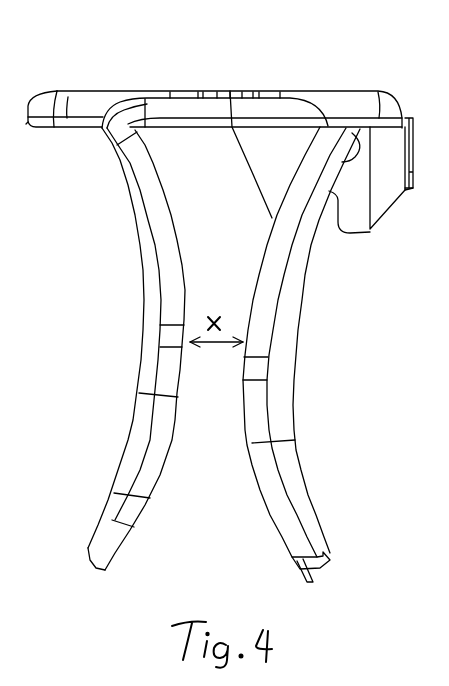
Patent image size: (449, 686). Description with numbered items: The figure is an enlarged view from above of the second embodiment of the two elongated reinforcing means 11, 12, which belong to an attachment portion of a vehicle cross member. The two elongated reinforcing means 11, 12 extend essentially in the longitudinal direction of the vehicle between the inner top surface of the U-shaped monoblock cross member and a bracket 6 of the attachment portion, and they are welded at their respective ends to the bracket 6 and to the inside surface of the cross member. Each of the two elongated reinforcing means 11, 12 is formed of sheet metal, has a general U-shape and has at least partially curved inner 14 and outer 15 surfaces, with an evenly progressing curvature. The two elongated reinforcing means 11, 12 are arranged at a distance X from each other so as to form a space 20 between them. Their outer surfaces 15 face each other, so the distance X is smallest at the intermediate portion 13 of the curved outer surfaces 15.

The bracket 6 is at (404, 39).
The elongated reinforcing means 11 is at (40, 372).
The elongated reinforcing means 12 is at (390, 354).
The intermediate portion 13 is at (393, 464).
The inner surface 14 is at (399, 413).
The outer surface 15 is at (61, 268).
The space 20 is at (214, 460).